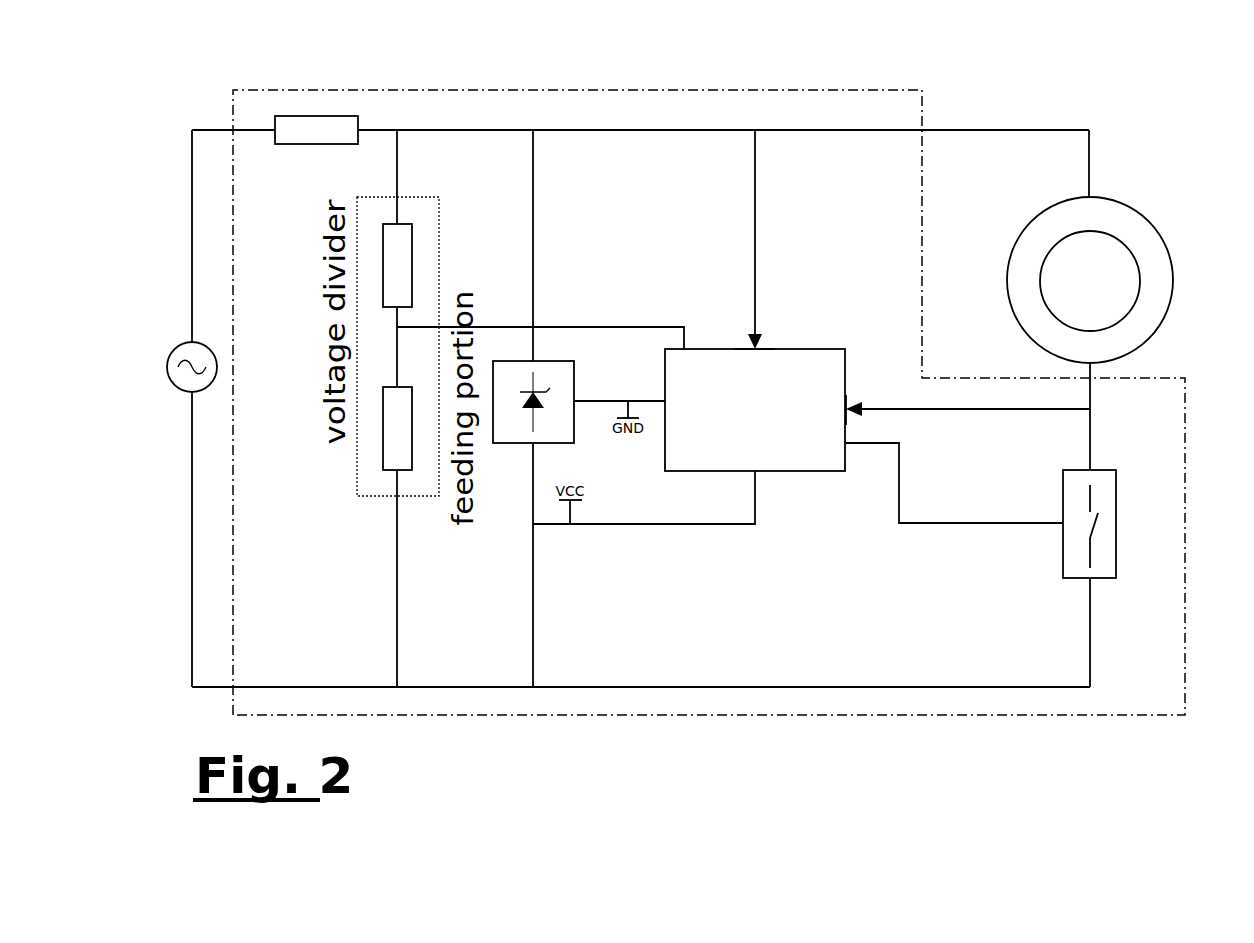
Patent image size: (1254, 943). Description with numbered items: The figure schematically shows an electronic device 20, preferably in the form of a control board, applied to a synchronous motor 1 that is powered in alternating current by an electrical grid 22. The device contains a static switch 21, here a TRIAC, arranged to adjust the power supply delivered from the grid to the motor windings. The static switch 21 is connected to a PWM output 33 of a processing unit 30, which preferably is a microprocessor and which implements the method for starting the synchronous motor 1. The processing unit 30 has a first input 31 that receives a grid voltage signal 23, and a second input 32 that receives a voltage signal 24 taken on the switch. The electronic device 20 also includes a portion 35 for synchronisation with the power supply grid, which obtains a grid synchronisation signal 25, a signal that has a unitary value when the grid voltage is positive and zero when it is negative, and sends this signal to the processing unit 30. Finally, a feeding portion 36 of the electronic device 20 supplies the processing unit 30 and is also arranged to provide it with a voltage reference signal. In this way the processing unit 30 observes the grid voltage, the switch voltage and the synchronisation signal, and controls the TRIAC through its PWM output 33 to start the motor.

The synchronous motor 1 is at (1123, 232).
The electronic device 20 is at (1047, 715).
The static switch 21 is at (1105, 495).
The electrical grid 22 is at (180, 347).
The grid voltage signal 23 is at (756, 265).
The voltage signal on the switch 24 is at (937, 412).
The grid synchronisation signal 25 is at (508, 327).
The processing unit 30 is at (787, 440).
The first input 31 is at (748, 347).
The second input 32 is at (847, 405).
The PWM output 33 is at (847, 443).
The portion for the synchronisation with the power supply grid 35 is at (355, 470).
The feeding portion 36 is at (517, 430).